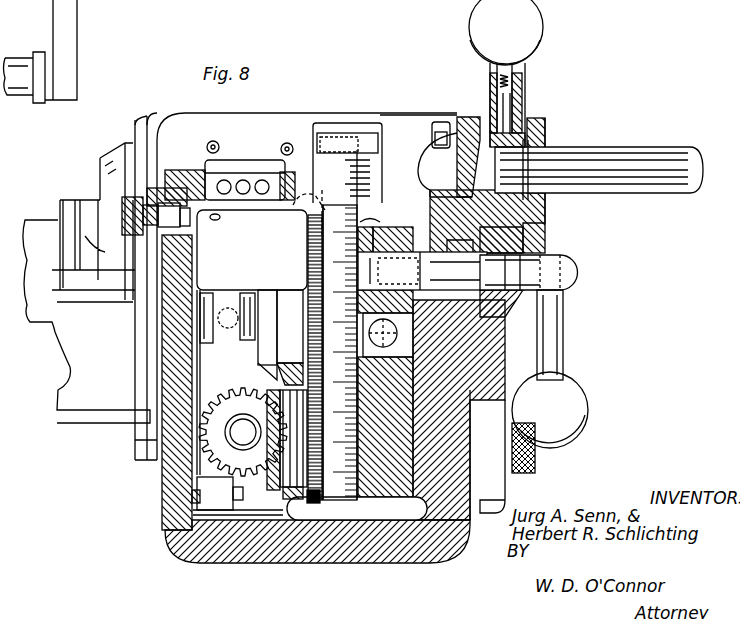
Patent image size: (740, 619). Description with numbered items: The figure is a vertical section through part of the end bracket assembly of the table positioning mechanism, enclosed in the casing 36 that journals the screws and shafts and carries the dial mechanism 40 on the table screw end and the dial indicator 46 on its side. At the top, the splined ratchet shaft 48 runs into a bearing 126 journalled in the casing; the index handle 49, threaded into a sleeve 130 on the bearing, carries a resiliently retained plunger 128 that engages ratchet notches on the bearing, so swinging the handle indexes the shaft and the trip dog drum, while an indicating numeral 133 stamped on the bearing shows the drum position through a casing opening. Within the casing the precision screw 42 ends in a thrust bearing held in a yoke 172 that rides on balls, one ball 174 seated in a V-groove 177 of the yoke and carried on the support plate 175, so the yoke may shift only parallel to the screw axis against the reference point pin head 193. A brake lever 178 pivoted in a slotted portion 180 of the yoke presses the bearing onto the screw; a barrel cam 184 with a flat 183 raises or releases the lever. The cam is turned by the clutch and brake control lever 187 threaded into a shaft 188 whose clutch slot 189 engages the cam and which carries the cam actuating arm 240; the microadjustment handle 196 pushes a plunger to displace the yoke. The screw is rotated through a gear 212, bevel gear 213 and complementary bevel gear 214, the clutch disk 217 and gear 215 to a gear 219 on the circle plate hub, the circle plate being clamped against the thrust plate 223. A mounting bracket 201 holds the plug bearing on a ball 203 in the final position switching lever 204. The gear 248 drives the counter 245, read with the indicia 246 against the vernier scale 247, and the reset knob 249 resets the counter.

The casing 36 is at (322, 545).
The dial mechanism 40 is at (100, 158).
The precision screw 42 is at (262, 366).
The dial indicator 46 is at (62, 275).
The splined ratchet shaft 48 is at (640, 150).
The index handle 49 is at (532, 55).
The bearing 126 is at (460, 169).
The plunger 128 is at (523, 99).
The sleeve 130 is at (528, 120).
The indicating numeral 133 is at (440, 120).
The yoke 172 is at (360, 381).
The ball 174 is at (368, 338).
The support plate 175 is at (387, 470).
The V-groove 177 is at (365, 316).
The brake lever 178 is at (385, 224).
The slotted portion 180 is at (375, 222).
The flat 183 is at (422, 262).
The barrel cam 184 is at (360, 268).
The clutch and brake control lever 187 is at (570, 406).
The shaft 188 is at (555, 272).
The clutch slot 189 is at (422, 282).
The reference point pin head 193 is at (420, 325).
The microadjustment handle 196 is at (536, 461).
The mounting bracket 201 is at (213, 290).
The ball 203 is at (240, 300).
The final position switching lever 204 is at (230, 352).
The gear 212 is at (200, 457).
The bevel gear 213 is at (243, 432).
The complementary bevel gear 214 is at (283, 368).
The gear 215 is at (310, 500).
The clutch disk 217 is at (292, 492).
The gear 219 is at (298, 321).
The thrust plate 223 is at (274, 300).
The cam actuating arm 240 is at (525, 241).
The counter 245 is at (243, 180).
The indicia 246 is at (340, 165).
The vernier scale 247 is at (385, 162).
The gear 248 is at (308, 262).
The reset knob 249 is at (120, 197).